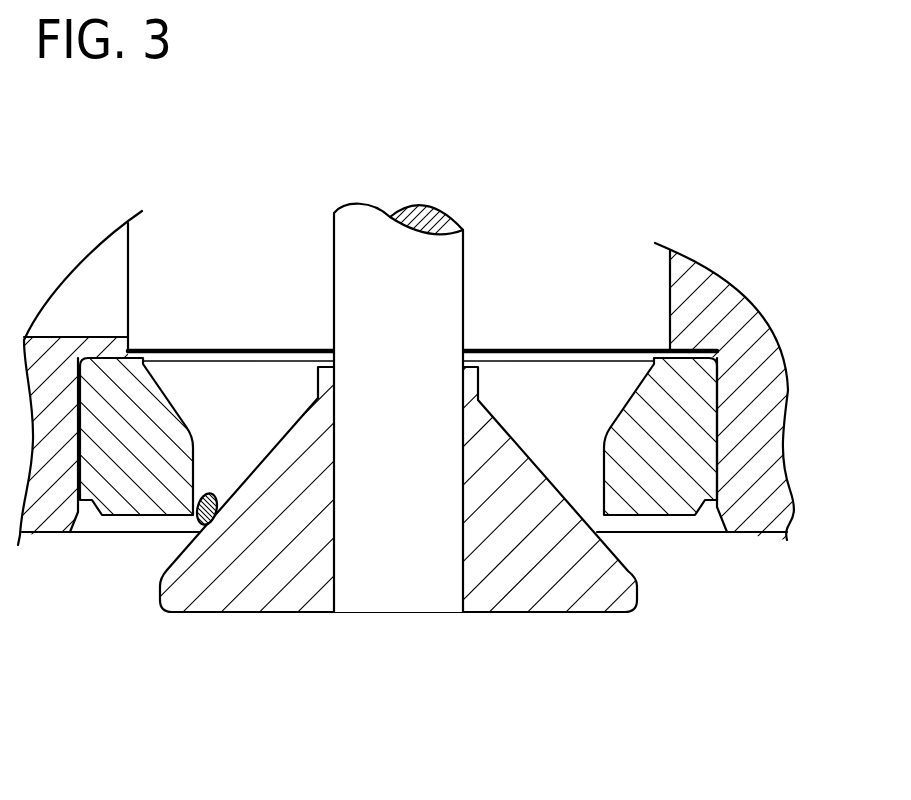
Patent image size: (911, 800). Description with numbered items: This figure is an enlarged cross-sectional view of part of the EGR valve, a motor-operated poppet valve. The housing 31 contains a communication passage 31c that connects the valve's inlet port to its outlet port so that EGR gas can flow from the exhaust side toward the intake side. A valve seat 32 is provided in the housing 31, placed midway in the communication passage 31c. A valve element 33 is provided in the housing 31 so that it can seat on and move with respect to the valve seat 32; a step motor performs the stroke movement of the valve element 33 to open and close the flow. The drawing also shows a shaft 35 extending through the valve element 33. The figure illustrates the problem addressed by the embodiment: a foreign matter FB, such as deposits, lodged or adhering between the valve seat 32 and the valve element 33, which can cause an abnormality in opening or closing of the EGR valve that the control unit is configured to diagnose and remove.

The housing 31 is at (717, 287).
The communication passage 31c is at (583, 300).
The valve seat 32 is at (670, 500).
The valve element 33 is at (510, 612).
The shaft 35 is at (463, 243).
The foreign matter FB is at (222, 492).